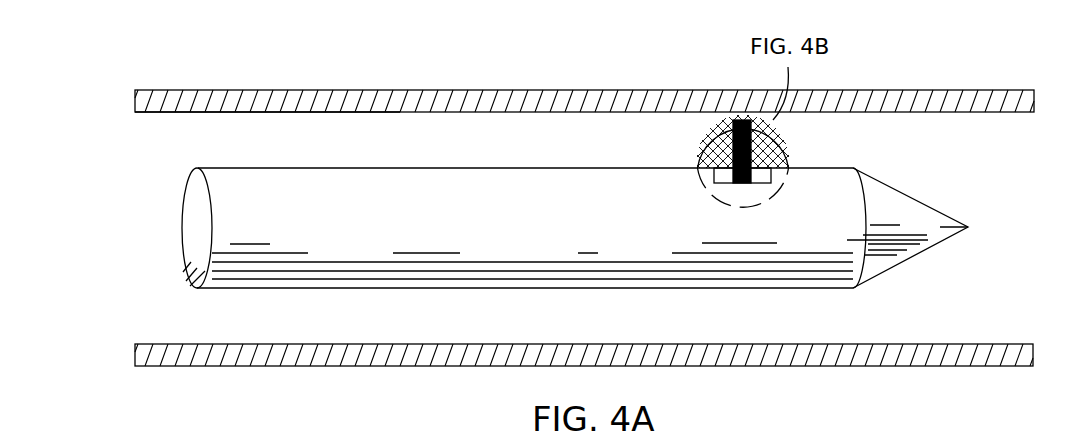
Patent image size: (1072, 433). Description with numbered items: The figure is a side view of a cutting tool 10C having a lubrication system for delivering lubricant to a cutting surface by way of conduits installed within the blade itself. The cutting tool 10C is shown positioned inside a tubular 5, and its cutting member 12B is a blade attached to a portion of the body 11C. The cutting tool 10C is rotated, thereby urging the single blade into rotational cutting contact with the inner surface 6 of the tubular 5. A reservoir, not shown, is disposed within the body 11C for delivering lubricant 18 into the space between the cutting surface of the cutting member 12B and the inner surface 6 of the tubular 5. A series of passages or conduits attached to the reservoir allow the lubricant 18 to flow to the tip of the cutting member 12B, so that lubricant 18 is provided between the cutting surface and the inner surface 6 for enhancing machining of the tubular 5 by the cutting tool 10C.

The tubular 5 is at (231, 90).
The inner surface 6 is at (165, 113).
The cutting tool 10C is at (143, 244).
The body 11C is at (898, 191).
The cutting member 12B is at (762, 148).
The lubricant 18 is at (710, 138).